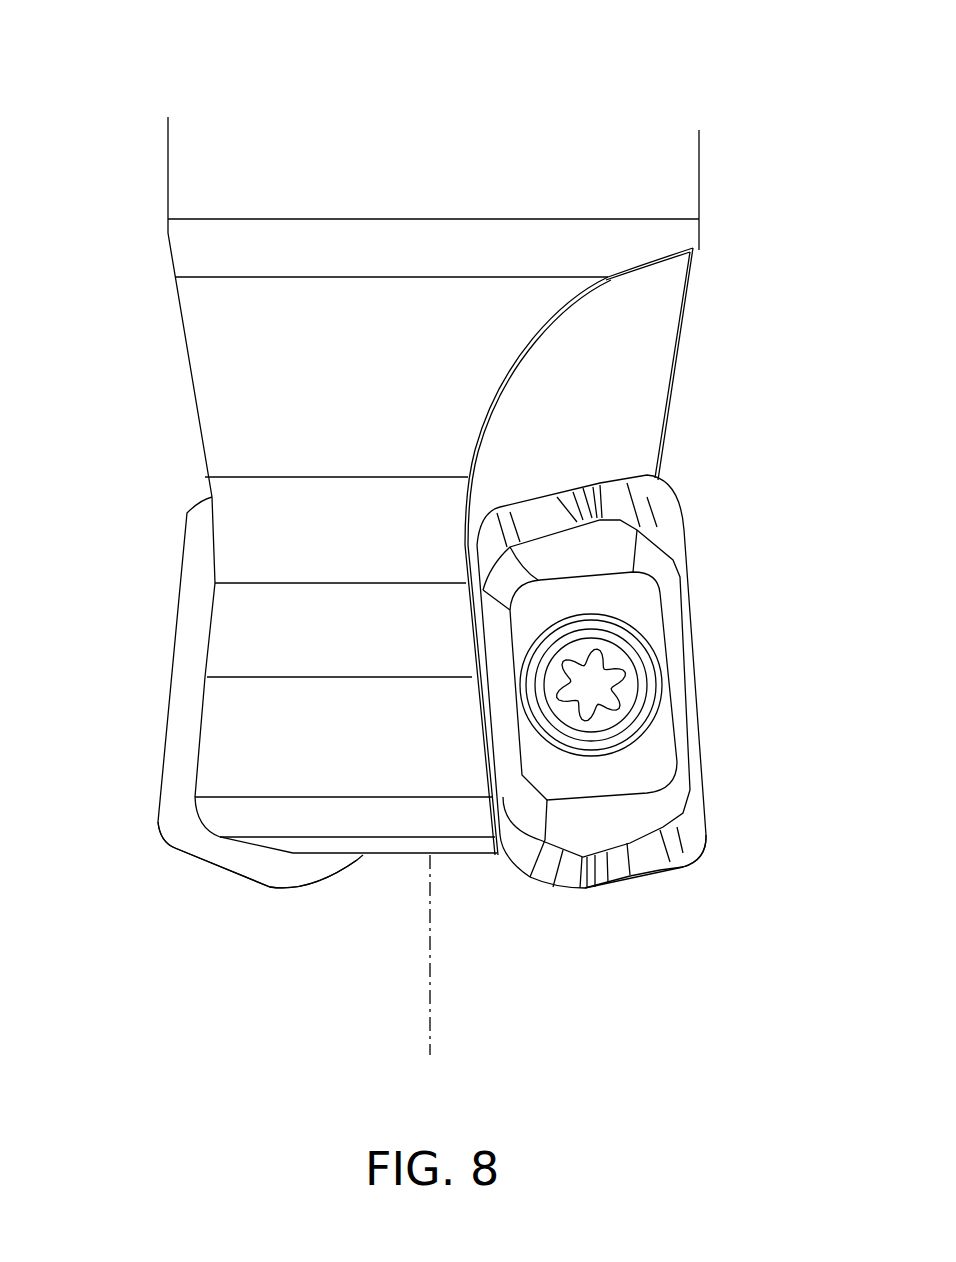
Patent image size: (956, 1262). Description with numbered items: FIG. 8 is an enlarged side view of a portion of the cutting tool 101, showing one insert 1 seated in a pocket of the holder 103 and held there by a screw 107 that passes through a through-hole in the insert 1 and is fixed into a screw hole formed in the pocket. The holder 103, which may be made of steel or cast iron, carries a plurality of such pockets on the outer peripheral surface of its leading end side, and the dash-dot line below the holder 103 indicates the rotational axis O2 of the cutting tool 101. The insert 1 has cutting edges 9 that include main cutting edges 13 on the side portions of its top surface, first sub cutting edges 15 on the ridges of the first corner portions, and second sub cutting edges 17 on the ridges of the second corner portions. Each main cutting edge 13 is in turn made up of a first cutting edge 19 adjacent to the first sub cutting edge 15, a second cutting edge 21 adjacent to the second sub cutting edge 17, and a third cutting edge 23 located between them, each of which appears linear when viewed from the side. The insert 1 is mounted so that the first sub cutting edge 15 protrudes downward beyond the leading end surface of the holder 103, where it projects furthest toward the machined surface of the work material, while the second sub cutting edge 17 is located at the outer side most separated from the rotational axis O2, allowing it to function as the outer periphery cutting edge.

The cutting tool 101 is at (306, 120).
The holder 103 is at (210, 315).
The screw 107 is at (588, 688).
The insert 1 is at (185, 718).
The cutting edges 9 is at (158, 842).
The main cutting edges 13 is at (215, 868).
The first sub cutting edges 15 is at (290, 887).
The second sub cutting edges 17 is at (705, 847).
The first cutting edge 19 is at (607, 885).
The second cutting edge 21 is at (678, 862).
The third cutting edge 23 is at (640, 877).
The rotational axis O2 is at (433, 974).